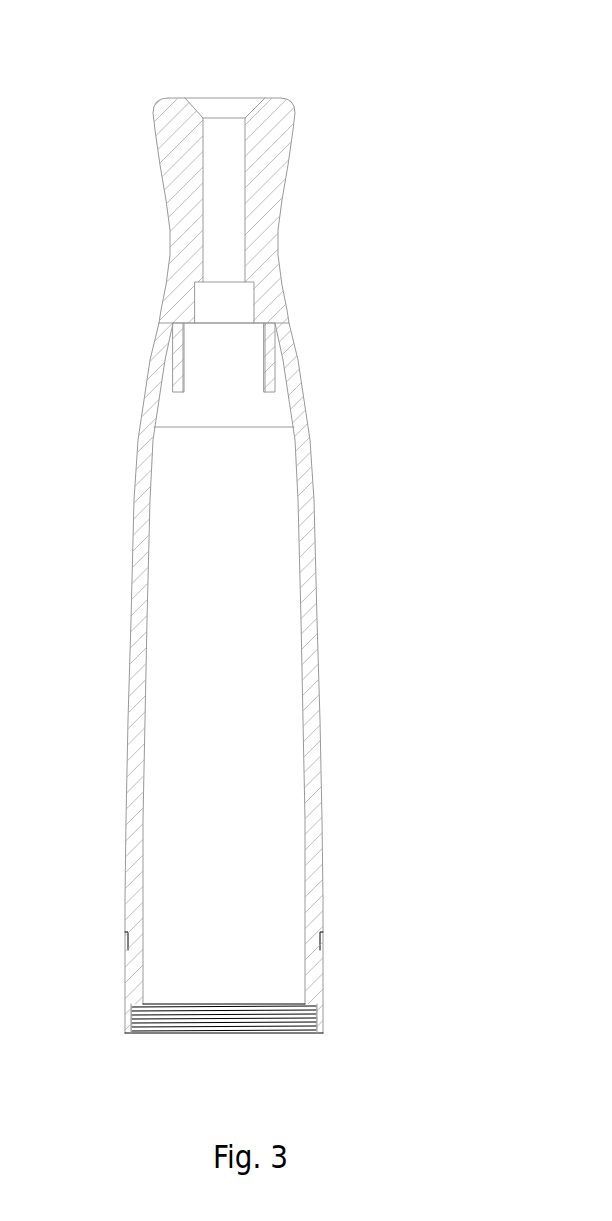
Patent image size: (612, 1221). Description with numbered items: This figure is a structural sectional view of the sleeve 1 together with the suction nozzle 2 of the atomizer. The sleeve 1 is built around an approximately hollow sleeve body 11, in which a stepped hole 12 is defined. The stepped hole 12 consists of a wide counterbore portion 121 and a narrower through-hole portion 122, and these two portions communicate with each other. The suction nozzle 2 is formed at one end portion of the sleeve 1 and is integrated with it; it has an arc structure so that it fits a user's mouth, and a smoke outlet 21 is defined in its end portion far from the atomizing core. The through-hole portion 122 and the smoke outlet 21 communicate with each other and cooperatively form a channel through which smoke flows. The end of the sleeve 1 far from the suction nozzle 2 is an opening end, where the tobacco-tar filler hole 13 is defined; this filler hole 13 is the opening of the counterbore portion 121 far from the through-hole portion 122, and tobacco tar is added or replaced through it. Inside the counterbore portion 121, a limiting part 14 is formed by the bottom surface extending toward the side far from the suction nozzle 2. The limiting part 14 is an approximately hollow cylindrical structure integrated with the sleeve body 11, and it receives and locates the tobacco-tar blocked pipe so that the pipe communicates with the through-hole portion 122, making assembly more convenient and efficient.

The sleeve 1 is at (306, 550).
The sleeve body 11 is at (310, 603).
The stepped hole 12 is at (283, 351).
The counterbore portion 121 is at (252, 370).
The through-hole portion 122 is at (258, 305).
The tobacco-tar filler hole 13 is at (228, 990).
The limiting part 14 is at (178, 362).
The suction nozzle 2 is at (306, 550).
The smoke outlet 21 is at (230, 105).